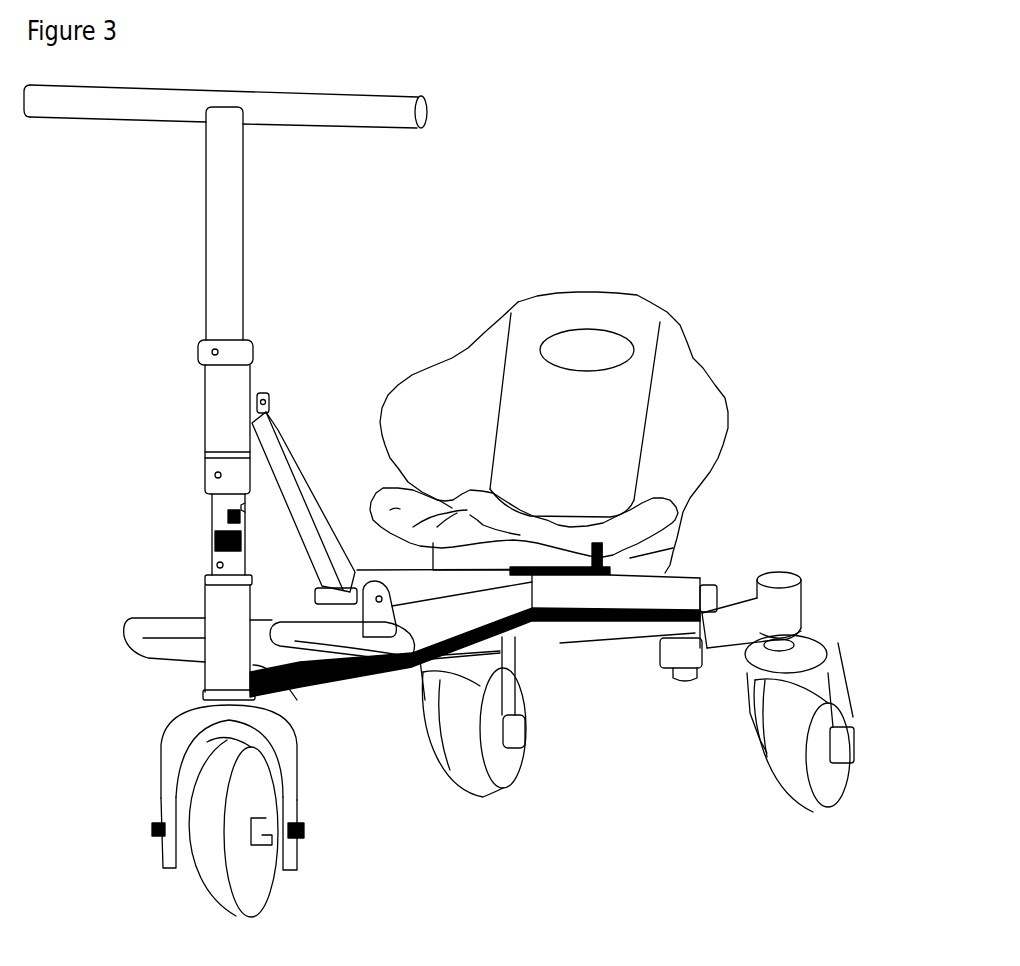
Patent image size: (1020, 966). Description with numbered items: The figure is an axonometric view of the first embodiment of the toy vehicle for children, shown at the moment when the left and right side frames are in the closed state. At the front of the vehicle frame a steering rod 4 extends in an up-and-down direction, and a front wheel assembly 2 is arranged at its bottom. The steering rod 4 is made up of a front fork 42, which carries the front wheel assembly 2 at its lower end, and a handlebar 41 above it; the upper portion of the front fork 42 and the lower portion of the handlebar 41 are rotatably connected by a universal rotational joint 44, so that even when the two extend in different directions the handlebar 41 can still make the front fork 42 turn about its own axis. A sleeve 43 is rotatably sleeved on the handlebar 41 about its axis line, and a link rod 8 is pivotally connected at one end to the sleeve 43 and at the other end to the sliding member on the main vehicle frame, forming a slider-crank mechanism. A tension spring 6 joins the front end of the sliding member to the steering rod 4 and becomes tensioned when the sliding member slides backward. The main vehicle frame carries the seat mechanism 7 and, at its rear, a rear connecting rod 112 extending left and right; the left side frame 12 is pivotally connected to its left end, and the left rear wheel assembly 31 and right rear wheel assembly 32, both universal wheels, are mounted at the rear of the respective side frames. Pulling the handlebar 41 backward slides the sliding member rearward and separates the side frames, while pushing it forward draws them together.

The front wheel assembly 2 is at (207, 890).
The steering rod 4 is at (150, 449).
The handlebar 41 is at (225, 285).
The front fork 42 is at (230, 660).
The sleeve 43 is at (228, 415).
The universal rotational joint 44 is at (210, 541).
The tension spring 6 is at (292, 690).
The seat mechanism 7 is at (535, 323).
The link rod 8 is at (280, 430).
The rear connecting rod 112 is at (650, 595).
The left side frame 12 is at (757, 592).
The left rear wheel assembly 31 is at (797, 780).
The right rear wheel assembly 32 is at (468, 777).